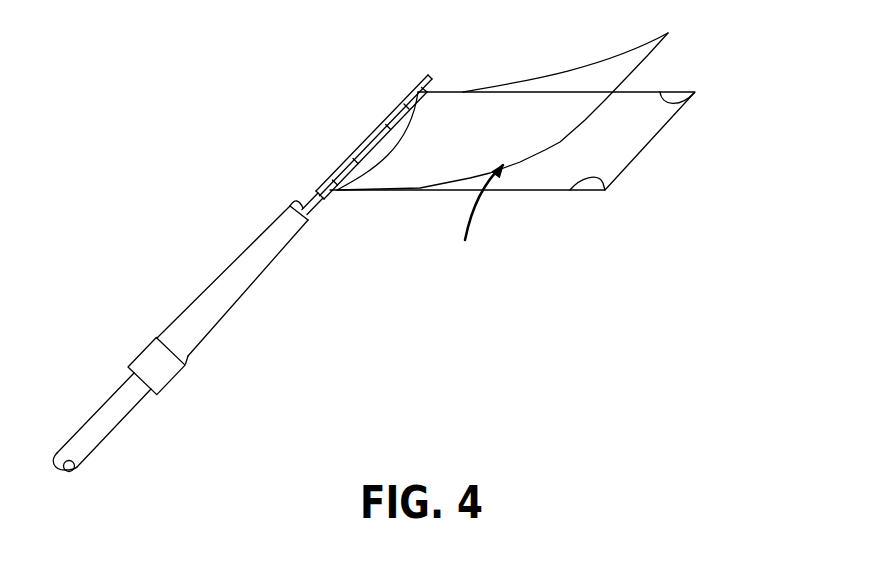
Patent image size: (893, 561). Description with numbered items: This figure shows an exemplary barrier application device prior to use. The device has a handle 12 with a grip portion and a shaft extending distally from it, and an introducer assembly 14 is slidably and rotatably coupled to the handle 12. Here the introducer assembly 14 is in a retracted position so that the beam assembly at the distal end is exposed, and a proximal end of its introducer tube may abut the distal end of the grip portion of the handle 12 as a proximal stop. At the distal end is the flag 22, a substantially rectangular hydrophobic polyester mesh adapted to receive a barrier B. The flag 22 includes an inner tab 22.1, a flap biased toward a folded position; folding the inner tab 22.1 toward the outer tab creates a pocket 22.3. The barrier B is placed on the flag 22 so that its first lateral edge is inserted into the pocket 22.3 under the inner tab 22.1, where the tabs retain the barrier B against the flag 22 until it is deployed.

The handle 12 is at (87, 420).
The introducer assembly 14 is at (206, 288).
The flag 22 is at (650, 115).
The inner tab 22.1 is at (402, 123).
The pocket 22.3 is at (363, 127).
The barrier B is at (479, 224).